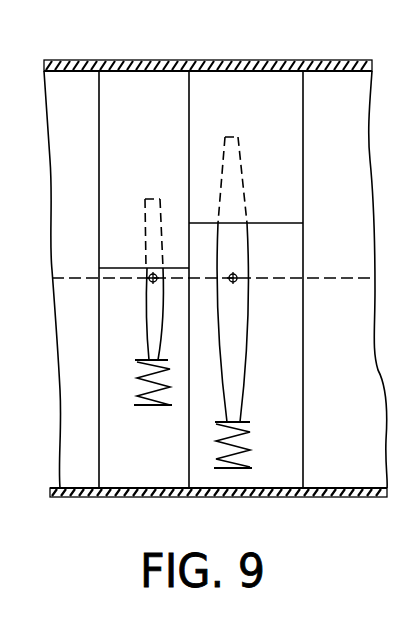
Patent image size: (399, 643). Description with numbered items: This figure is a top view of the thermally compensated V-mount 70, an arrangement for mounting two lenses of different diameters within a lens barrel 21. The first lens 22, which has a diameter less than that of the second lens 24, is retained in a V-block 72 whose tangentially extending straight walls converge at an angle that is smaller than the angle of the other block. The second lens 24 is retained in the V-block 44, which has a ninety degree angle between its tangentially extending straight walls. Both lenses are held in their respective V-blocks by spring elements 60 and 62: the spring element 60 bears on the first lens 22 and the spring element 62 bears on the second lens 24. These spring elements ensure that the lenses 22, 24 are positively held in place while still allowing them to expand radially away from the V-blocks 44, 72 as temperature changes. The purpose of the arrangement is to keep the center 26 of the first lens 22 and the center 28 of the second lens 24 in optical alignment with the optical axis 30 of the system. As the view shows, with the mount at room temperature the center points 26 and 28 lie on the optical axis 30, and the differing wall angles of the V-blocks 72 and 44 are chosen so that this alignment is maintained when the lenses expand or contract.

The lens barrel 21 is at (212, 61).
The first lens 22 is at (148, 343).
The second lens 24 is at (236, 352).
The center of first lens 26 is at (150, 282).
The center of second lens 28 is at (237, 283).
The optical axis 30 is at (345, 272).
The V-block 44 is at (291, 162).
The spring element 60 is at (143, 388).
The spring element 62 is at (246, 446).
The thermally compensated V-mount 70 is at (82, 390).
The V-block 72 is at (120, 152).